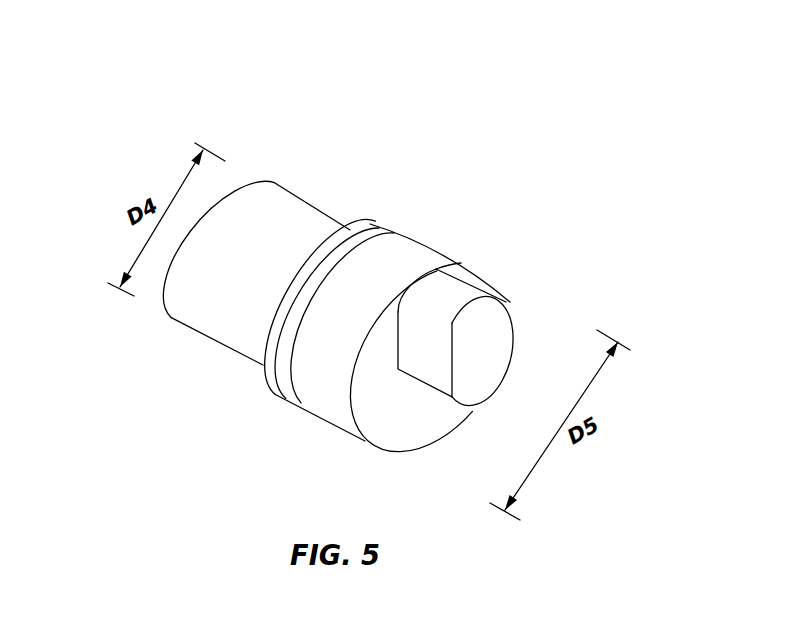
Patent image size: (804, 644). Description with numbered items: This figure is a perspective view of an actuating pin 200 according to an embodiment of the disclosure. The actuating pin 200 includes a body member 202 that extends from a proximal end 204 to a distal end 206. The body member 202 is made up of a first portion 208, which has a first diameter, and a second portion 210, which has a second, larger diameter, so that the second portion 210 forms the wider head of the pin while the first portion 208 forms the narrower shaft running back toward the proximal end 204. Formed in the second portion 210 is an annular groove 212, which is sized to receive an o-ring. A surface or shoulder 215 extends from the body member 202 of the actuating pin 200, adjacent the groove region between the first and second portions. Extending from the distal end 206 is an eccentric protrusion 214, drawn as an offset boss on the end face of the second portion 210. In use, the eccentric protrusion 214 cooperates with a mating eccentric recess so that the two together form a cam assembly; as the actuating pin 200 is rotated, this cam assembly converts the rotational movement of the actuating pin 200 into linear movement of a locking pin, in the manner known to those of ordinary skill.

The actuating pin 200 is at (533, 197).
The body member 202 is at (282, 174).
The proximal end 204 is at (170, 318).
The distal end 206 is at (488, 284).
The first portion 208 is at (238, 325).
The second portion 210 is at (347, 419).
The annular groove 212 is at (376, 238).
The eccentric protrusion 214 is at (497, 328).
The surface or shoulder 215 is at (328, 251).